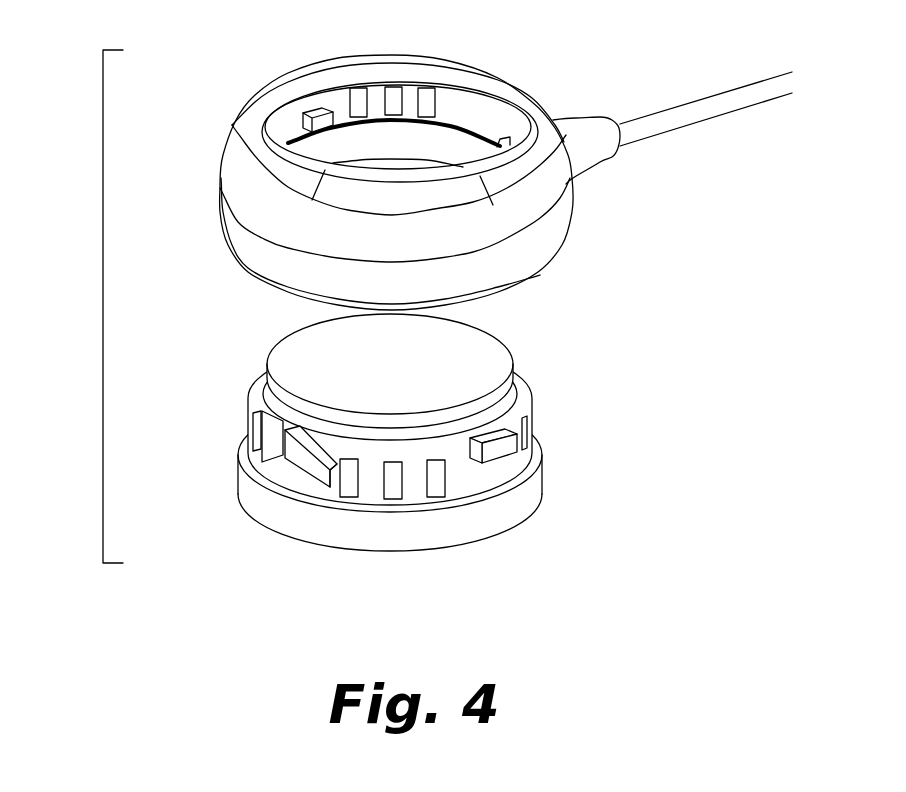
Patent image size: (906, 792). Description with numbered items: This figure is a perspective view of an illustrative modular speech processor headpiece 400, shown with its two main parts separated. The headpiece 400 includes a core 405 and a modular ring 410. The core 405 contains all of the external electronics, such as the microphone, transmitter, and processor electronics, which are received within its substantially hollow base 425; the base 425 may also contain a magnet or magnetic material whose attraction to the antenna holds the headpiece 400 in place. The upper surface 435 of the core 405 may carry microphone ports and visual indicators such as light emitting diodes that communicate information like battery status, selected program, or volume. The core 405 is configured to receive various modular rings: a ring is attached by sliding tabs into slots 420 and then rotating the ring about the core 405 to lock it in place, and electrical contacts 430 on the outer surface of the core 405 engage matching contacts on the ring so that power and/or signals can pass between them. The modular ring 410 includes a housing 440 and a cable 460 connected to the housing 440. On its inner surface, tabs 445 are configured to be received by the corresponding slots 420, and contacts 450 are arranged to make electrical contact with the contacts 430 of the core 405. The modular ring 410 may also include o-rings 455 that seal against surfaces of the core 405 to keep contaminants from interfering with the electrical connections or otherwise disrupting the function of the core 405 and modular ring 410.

The modular speech processor headpiece 400 is at (103, 293).
The core 405 is at (421, 457).
The modular ring 410 is at (567, 77).
The slots 420 is at (293, 468).
The base 425 is at (313, 525).
The electrical contacts 430 is at (395, 487).
The upper surface 435 is at (313, 368).
The housing 440 is at (227, 227).
The tabs 445 is at (317, 112).
The contacts 450 is at (392, 92).
The o-rings 455 is at (463, 128).
The cable 460 is at (713, 107).